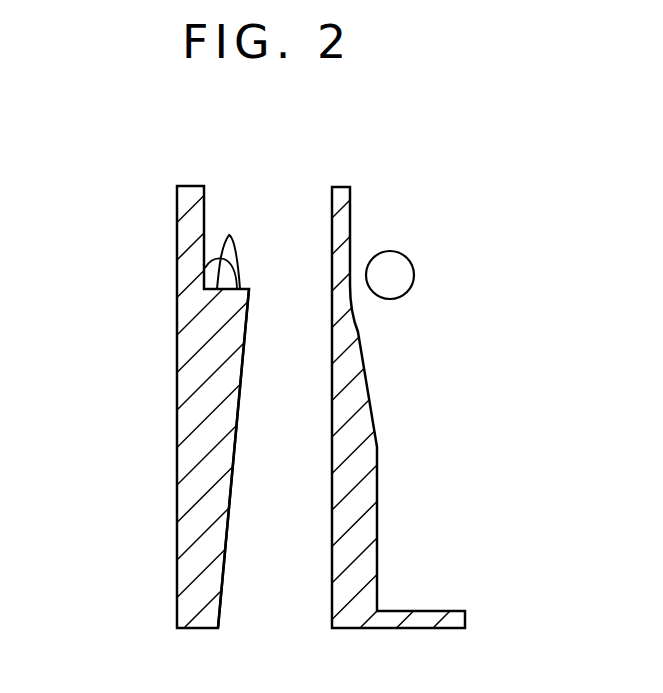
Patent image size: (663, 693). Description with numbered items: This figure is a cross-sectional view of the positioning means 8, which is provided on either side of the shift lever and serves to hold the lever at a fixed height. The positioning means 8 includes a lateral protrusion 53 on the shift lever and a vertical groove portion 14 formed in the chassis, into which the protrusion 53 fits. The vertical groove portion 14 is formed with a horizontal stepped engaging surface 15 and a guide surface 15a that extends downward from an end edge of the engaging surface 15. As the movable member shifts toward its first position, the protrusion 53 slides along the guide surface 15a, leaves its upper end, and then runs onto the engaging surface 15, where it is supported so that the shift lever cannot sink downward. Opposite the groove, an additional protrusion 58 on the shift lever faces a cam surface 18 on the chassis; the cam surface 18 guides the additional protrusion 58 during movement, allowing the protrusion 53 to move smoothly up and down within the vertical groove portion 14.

The positioning means 8 is at (262, 208).
The vertical groove portion 14 is at (177, 390).
The engaging surface 15 is at (218, 270).
The guide surface 15a is at (228, 539).
The cam surface 18 is at (373, 414).
The protrusion 53 is at (240, 262).
The additional protrusion 58 is at (414, 272).